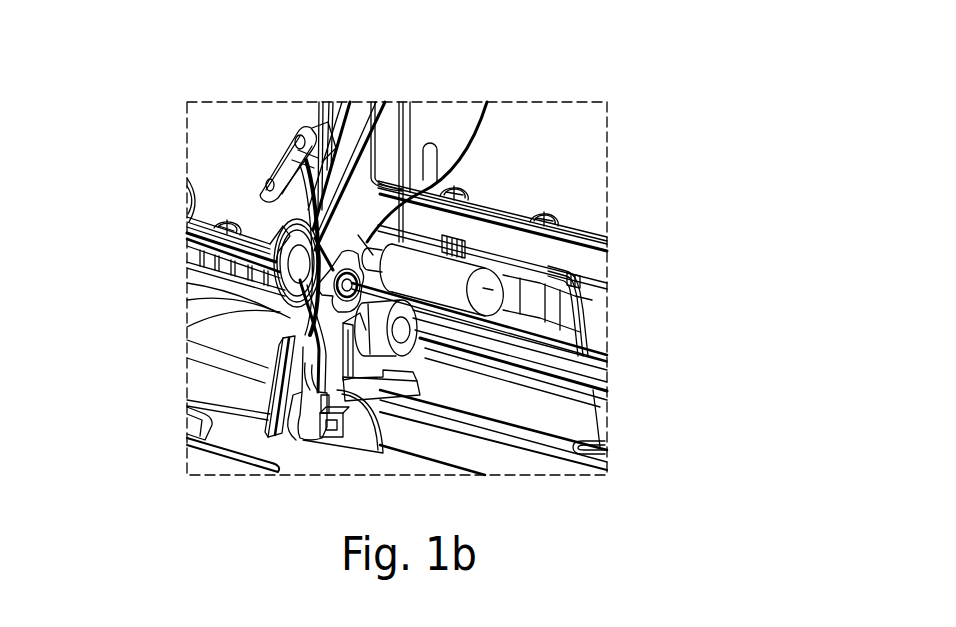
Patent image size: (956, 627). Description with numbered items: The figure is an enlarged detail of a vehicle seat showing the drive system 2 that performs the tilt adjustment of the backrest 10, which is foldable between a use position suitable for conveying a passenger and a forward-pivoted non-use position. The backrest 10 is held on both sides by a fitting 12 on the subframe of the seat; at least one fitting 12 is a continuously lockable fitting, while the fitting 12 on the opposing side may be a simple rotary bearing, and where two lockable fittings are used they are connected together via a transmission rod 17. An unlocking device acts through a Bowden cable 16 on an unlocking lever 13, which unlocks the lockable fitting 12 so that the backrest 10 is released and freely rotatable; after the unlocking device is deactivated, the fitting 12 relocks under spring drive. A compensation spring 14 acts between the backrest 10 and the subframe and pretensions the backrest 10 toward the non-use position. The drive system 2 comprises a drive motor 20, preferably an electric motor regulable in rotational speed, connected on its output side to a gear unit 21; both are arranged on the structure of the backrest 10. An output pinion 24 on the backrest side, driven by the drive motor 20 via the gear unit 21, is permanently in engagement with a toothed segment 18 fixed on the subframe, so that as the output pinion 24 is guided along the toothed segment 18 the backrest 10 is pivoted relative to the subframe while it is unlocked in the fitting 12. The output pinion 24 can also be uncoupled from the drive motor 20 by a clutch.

The backrest 10 is at (568, 117).
The drive system 2 is at (503, 387).
The fitting 12 is at (287, 258).
The unlocking lever 13 is at (340, 315).
The compensation spring 14 is at (275, 236).
The Bowden cable 16 is at (447, 171).
The transmission rod 17 is at (600, 453).
The toothed segment 18 is at (272, 390).
The drive motor 20 is at (592, 320).
The gear unit 21 is at (417, 342).
The output pinion 24 is at (343, 356).